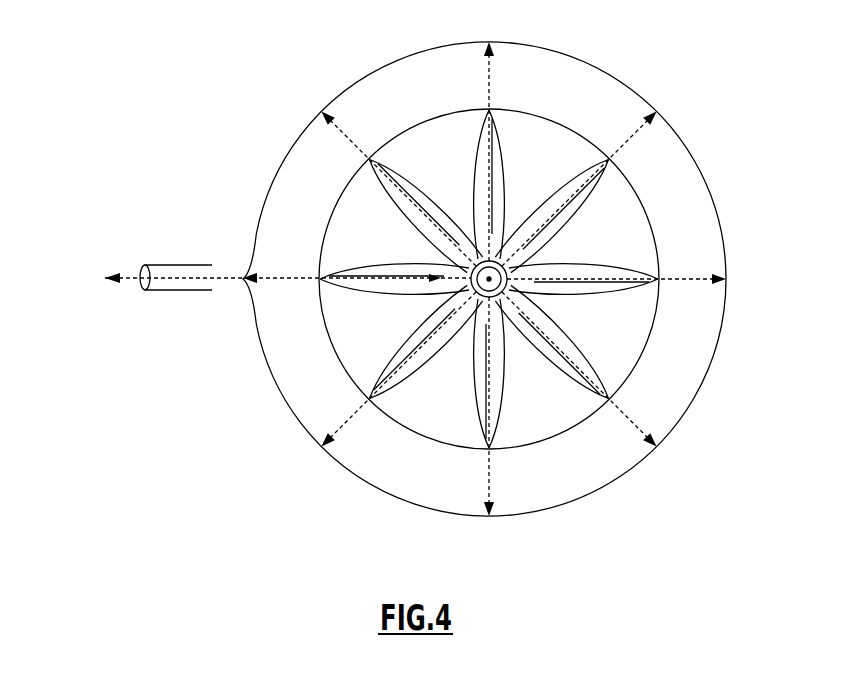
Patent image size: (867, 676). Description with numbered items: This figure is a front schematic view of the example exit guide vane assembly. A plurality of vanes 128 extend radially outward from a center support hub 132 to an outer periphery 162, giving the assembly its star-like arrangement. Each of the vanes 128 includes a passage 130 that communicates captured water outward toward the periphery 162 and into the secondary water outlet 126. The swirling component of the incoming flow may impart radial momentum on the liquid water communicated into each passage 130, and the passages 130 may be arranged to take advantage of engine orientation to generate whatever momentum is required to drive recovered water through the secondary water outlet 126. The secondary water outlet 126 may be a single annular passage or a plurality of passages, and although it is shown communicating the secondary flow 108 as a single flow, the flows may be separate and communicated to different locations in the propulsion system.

The secondary flow 108 is at (267, 278).
The secondary water outlet 126 is at (175, 290).
The vanes 128 is at (580, 172).
The passage 130 is at (497, 150).
The center support hub 132 is at (432, 303).
The outer periphery 162 is at (428, 445).